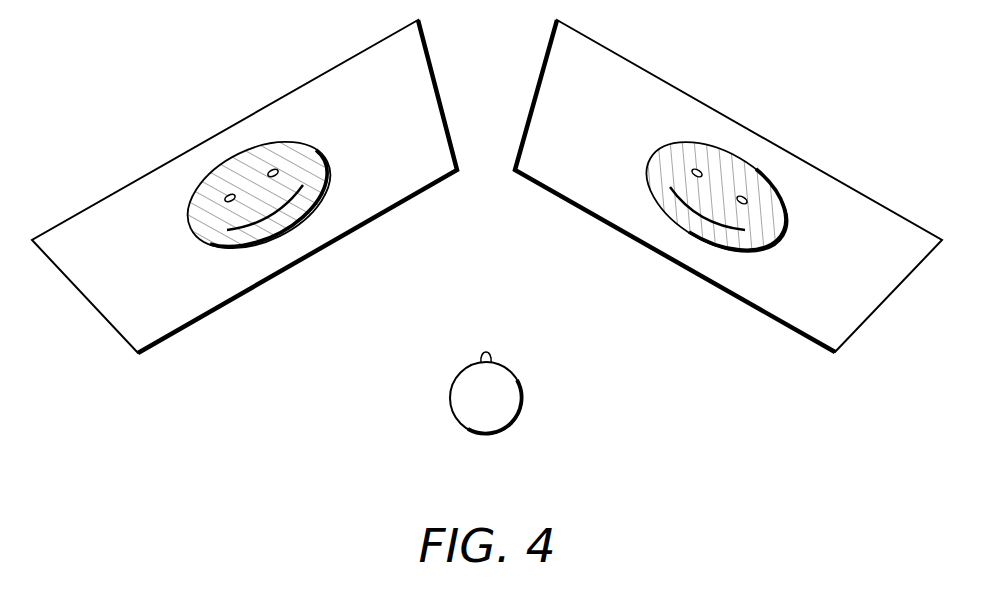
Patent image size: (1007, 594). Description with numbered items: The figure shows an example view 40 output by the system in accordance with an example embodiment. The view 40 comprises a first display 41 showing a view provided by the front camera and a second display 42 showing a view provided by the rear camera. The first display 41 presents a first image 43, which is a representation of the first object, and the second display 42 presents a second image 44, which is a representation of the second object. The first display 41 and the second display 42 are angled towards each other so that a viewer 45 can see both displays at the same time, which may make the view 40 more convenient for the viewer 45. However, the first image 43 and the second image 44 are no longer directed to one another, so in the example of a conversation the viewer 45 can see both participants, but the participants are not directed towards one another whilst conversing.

The view 40 is at (717, 390).
The first display 41 is at (102, 198).
The second display 42 is at (870, 198).
The first image 43 is at (188, 227).
The second image 44 is at (788, 227).
The viewer 45 is at (487, 435).